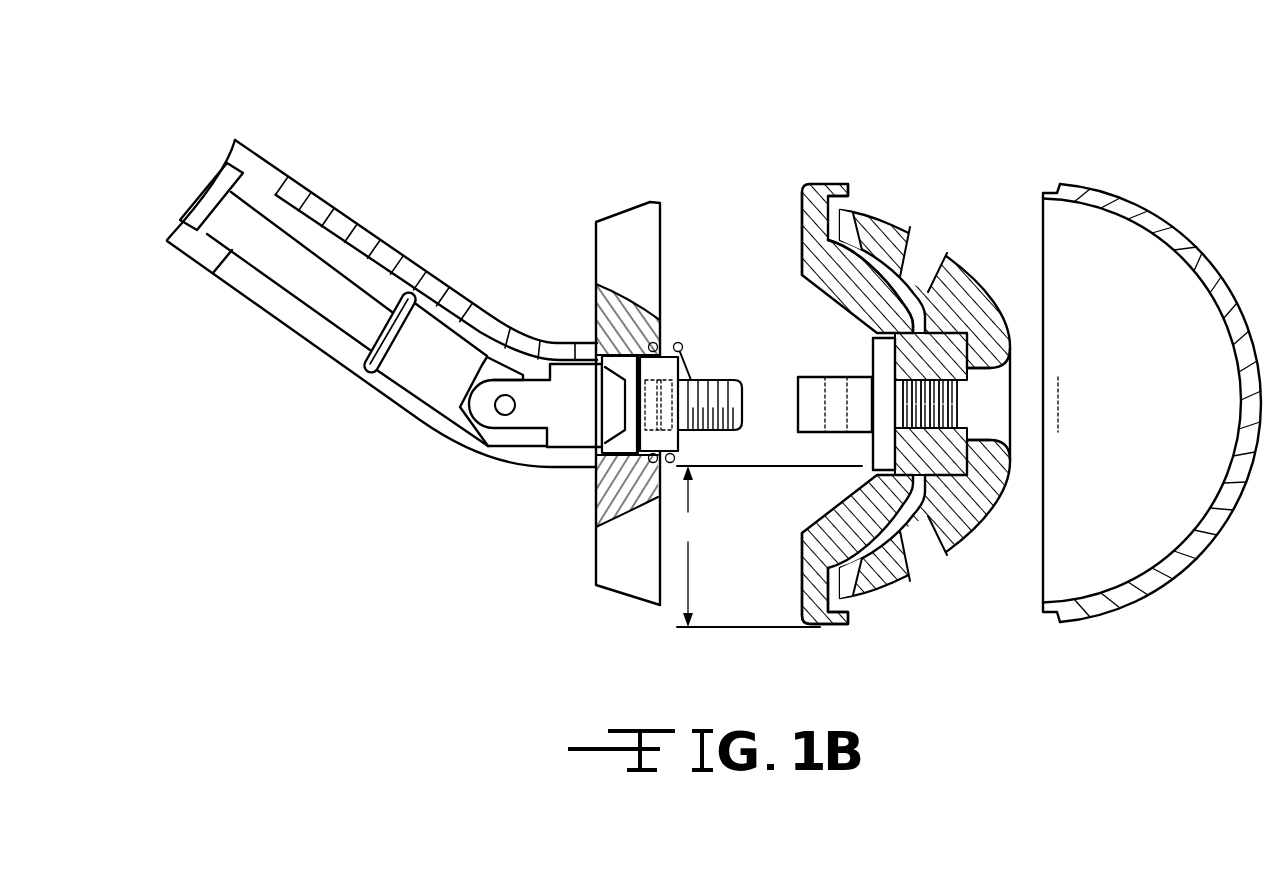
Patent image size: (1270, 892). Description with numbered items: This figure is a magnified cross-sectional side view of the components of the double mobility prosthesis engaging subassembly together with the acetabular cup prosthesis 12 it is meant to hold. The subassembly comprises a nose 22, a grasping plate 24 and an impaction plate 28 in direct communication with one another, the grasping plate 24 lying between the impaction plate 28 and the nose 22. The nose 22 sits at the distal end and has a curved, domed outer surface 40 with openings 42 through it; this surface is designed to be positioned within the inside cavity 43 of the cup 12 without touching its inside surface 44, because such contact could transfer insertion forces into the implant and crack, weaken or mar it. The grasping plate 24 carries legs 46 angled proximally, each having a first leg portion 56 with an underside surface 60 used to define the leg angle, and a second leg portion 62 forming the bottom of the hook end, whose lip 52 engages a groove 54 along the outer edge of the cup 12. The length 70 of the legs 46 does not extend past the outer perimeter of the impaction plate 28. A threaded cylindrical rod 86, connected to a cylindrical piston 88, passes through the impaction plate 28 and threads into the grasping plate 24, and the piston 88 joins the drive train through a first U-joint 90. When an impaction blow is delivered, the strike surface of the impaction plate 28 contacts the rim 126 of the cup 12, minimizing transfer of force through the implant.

The double mobility acetabular cup prosthesis 12 is at (1111, 403).
The nose 22 is at (880, 218).
The grasping plate 24 is at (827, 513).
The impaction plate 28 is at (620, 228).
The curved, domed outer surface 40 is at (999, 494).
The openings 42 is at (910, 553).
The inside cavity 43 is at (1088, 547).
The inside surface 44 is at (1198, 276).
The legs 46 is at (813, 267).
The lip 52 is at (843, 183).
The groove 54 is at (1058, 614).
The first leg portion 56 is at (855, 296).
The underside surface 60 is at (814, 288).
The second leg portion 62 is at (807, 568).
The length 70 is at (767, 546).
The cylindrical rod 86 is at (705, 380).
The cylindrical piston 88 is at (566, 428).
The first U-joint 90 is at (492, 372).
The rim 126 is at (1047, 196).